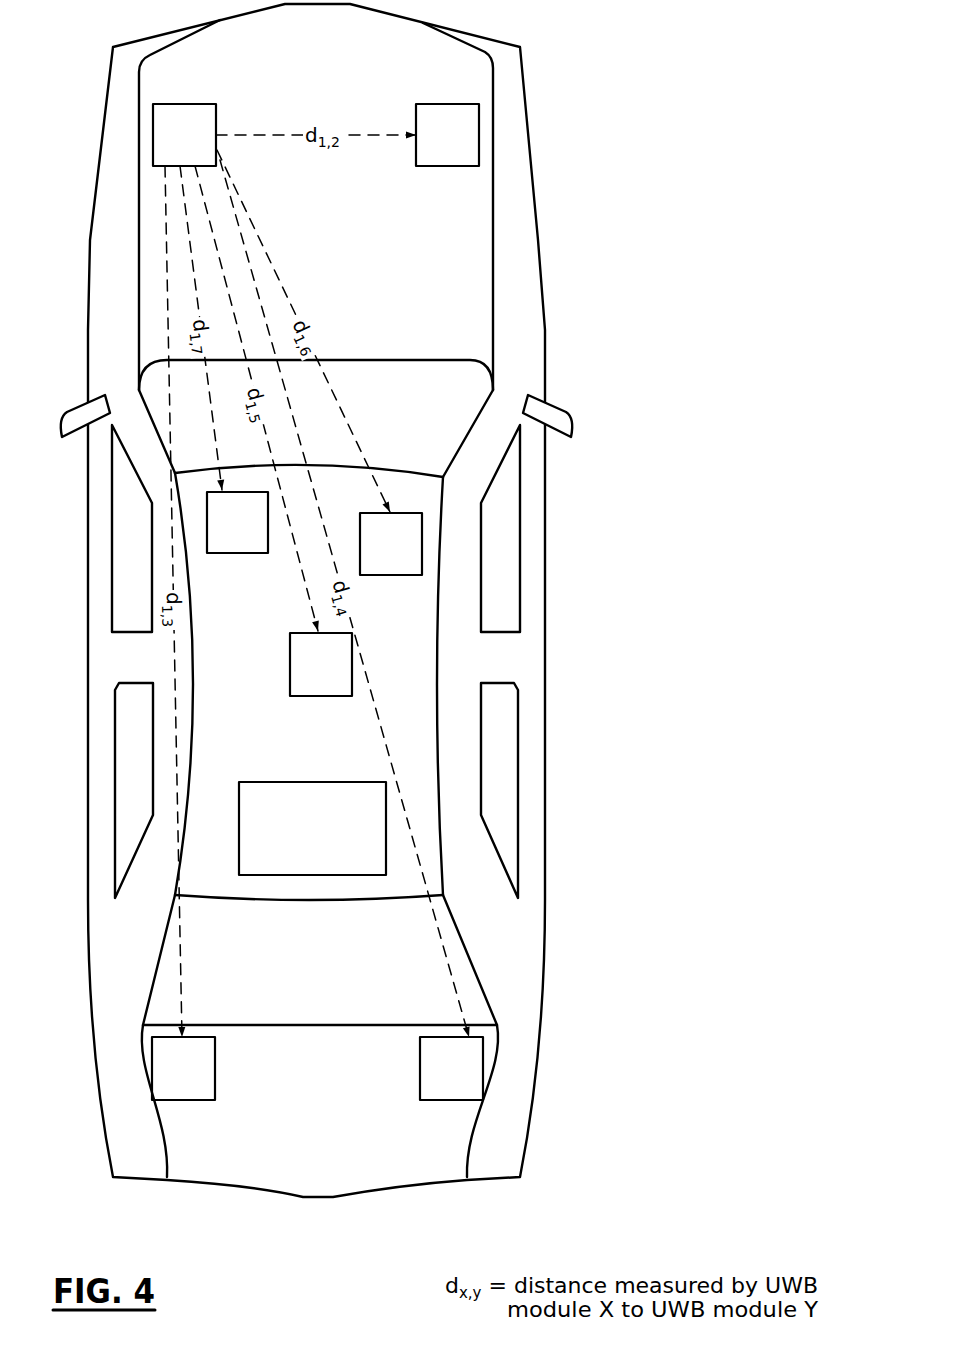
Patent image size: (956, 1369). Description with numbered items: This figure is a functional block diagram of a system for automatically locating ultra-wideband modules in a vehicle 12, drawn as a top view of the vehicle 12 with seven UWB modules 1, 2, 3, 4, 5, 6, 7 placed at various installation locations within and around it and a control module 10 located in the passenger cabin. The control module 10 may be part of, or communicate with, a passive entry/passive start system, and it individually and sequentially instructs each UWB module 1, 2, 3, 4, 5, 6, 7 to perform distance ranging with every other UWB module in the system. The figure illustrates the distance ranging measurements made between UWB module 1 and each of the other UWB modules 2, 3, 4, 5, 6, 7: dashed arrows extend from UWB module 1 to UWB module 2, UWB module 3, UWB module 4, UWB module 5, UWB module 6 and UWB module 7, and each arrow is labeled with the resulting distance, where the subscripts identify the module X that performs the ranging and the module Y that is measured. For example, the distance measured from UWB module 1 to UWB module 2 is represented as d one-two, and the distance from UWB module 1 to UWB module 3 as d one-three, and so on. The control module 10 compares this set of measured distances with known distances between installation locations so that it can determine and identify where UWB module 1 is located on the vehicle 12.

The UWB module 1 is at (184, 135).
The UWB module 2 is at (447, 135).
The UWB module 3 is at (183, 1068).
The UWB module 4 is at (451, 1068).
The UWB module 5 is at (321, 664).
The UWB module 6 is at (391, 544).
The UWB module 7 is at (237, 522).
The control module 10 is at (307, 782).
The vehicle 12 is at (538, 200).